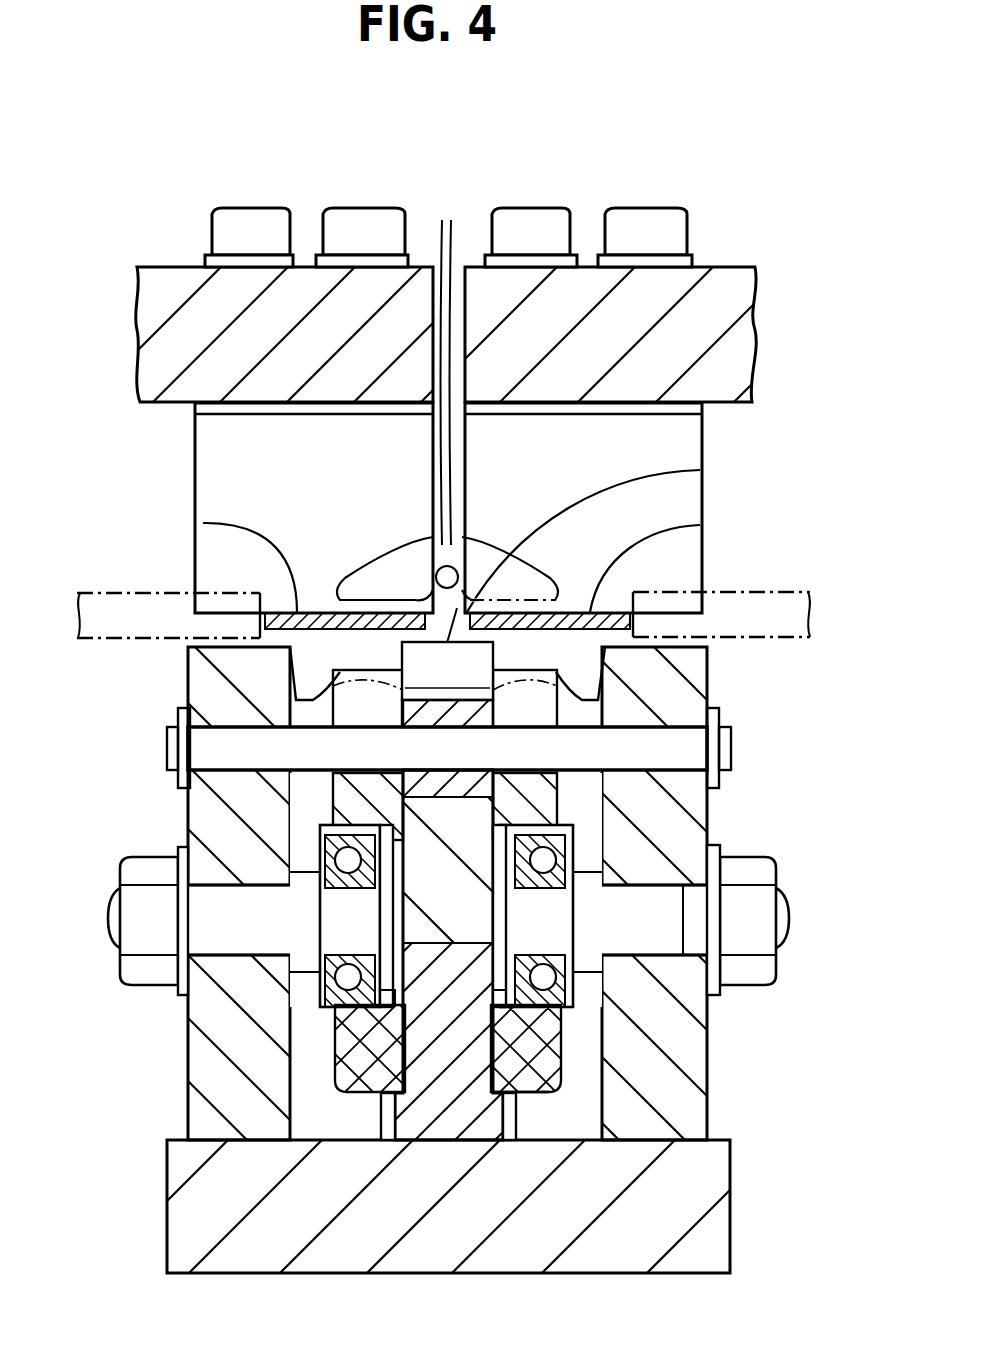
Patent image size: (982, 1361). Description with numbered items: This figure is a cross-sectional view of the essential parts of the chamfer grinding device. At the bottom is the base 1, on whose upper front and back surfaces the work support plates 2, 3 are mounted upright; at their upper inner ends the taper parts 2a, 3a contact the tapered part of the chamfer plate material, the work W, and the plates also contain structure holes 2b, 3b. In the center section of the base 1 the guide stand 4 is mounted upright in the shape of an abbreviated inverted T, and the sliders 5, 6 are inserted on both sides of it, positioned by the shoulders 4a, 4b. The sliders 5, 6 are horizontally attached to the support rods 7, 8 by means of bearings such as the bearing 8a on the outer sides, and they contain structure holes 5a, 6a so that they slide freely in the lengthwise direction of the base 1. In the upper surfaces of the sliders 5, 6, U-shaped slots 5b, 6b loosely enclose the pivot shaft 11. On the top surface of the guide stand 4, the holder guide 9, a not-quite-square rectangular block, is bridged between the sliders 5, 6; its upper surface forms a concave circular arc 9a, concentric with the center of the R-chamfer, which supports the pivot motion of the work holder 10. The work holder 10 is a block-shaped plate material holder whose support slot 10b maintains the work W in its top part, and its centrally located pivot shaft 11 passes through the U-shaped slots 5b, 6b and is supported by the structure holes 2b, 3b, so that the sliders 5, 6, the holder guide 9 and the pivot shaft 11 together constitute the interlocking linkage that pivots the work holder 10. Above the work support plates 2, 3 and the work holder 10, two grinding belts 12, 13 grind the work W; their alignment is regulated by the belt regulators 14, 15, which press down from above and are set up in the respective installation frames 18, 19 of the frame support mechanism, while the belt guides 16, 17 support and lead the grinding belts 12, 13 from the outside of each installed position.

The base 1 is at (708, 1240).
The work support plate 2 is at (225, 1092).
The taper part 2a is at (287, 698).
The structure hole 2b is at (340, 690).
The work support plate 3 is at (683, 1028).
The taper part 3a is at (600, 698).
The structure hole 3b is at (540, 700).
The guide stand 4 is at (445, 1057).
The shoulder 4a is at (390, 1143).
The shoulder 4b is at (502, 1097).
The slider 5 is at (335, 1025).
The structure hole 5a is at (232, 1142).
The U-shaped slot 5b is at (178, 748).
The slider 6 is at (550, 1032).
The structure hole 6a is at (555, 1060).
The U-shaped slot 6b is at (560, 677).
The support rod 7 is at (243, 907).
The support rod 8 is at (647, 903).
The bearing 8a is at (590, 862).
The holder guide 9 is at (575, 842).
The concave circular arc 9a is at (290, 802).
The work holder 10 is at (732, 744).
The support slot 10b is at (700, 470).
The pivot shaft 11 is at (267, 752).
The grinding belt 12 is at (203, 523).
The grinding belt 13 is at (700, 525).
The belt regulator 14 is at (225, 462).
The belt regulator 15 is at (677, 438).
The belt guide 16 is at (97, 596).
The belt guide 17 is at (783, 596).
The installation frame 18 is at (165, 285).
The installation frame 19 is at (727, 285).
The work W is at (447, 418).